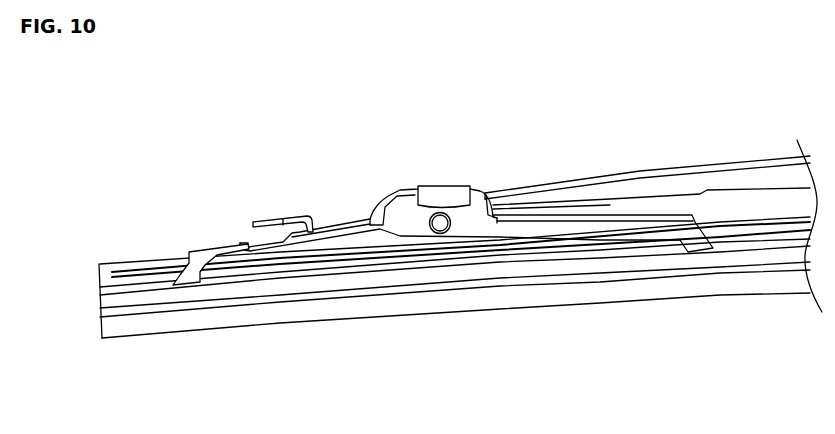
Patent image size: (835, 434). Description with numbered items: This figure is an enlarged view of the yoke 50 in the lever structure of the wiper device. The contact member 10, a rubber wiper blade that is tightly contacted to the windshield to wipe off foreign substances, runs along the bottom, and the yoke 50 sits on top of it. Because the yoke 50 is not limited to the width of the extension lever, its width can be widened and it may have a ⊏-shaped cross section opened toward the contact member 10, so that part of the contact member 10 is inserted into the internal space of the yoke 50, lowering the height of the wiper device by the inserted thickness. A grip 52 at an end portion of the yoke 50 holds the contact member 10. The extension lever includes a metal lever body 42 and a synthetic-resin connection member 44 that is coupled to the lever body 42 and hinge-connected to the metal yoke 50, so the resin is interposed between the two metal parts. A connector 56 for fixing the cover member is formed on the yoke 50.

The contact member 10 is at (146, 327).
The lever body 42 is at (602, 190).
The connection member 44 is at (433, 190).
The yoke 50 is at (343, 226).
The grip 52 is at (180, 263).
The connector 56 is at (261, 220).